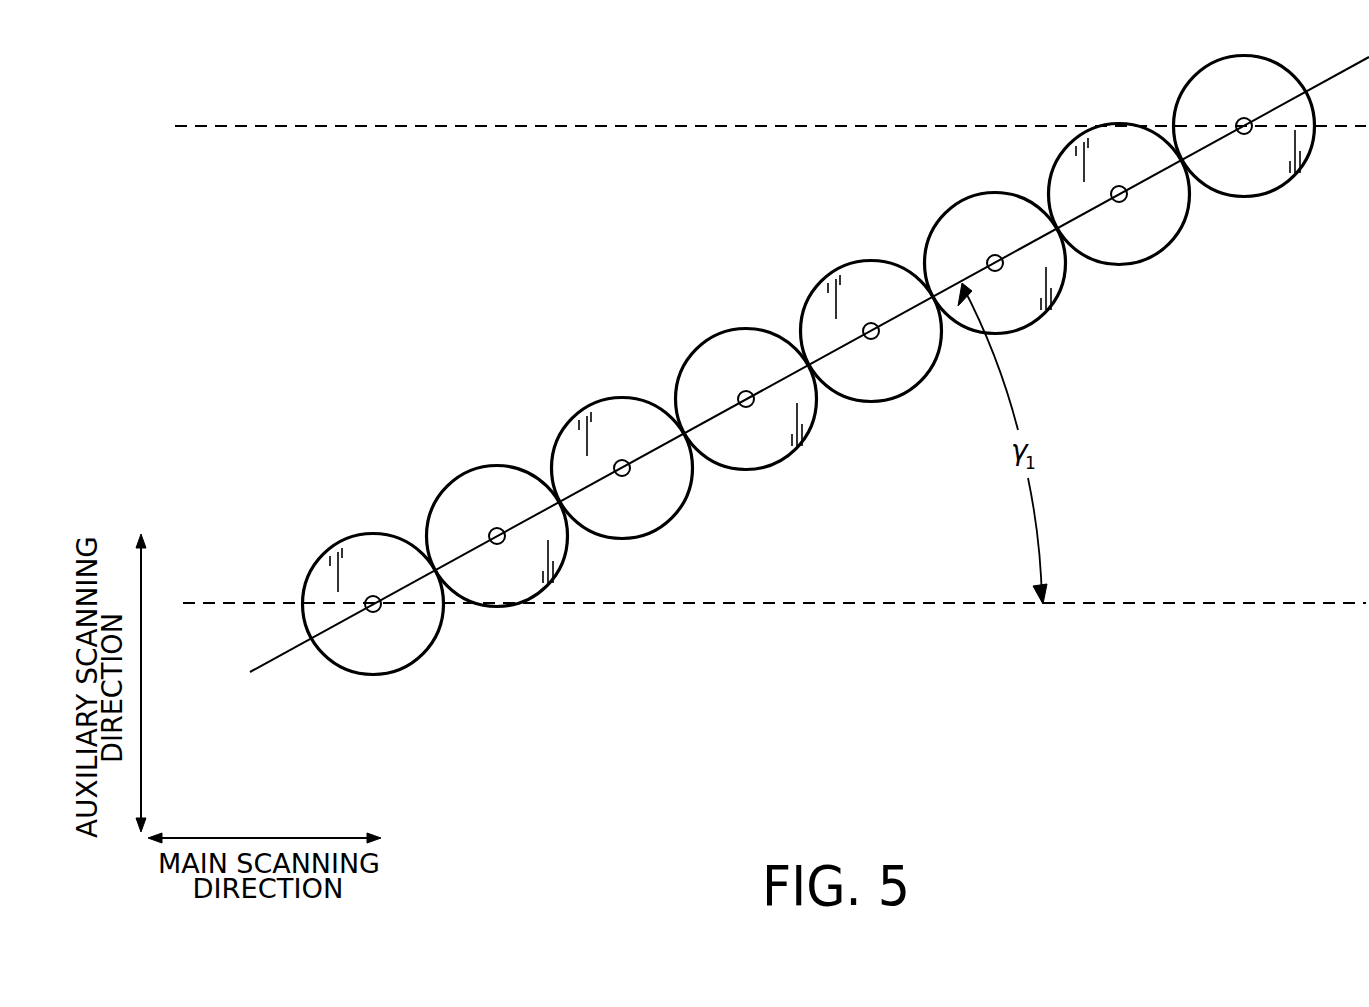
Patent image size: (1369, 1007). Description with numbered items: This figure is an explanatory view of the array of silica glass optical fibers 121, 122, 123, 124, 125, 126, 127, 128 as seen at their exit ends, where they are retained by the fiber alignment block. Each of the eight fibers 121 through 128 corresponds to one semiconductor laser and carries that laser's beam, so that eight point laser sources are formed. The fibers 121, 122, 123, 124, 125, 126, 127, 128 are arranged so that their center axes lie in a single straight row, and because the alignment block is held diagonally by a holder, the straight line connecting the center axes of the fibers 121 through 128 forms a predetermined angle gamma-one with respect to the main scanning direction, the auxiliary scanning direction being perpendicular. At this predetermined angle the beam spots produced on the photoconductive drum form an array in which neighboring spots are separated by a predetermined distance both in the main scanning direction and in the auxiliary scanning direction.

The optical fiber 121 is at (393, 655).
The optical fiber 122 is at (517, 587).
The optical fiber 123 is at (642, 519).
The optical fiber 124 is at (766, 450).
The optical fiber 125 is at (891, 382).
The optical fiber 126 is at (1028, 307).
The optical fiber 127 is at (1144, 240).
The optical fiber 128 is at (1260, 177).